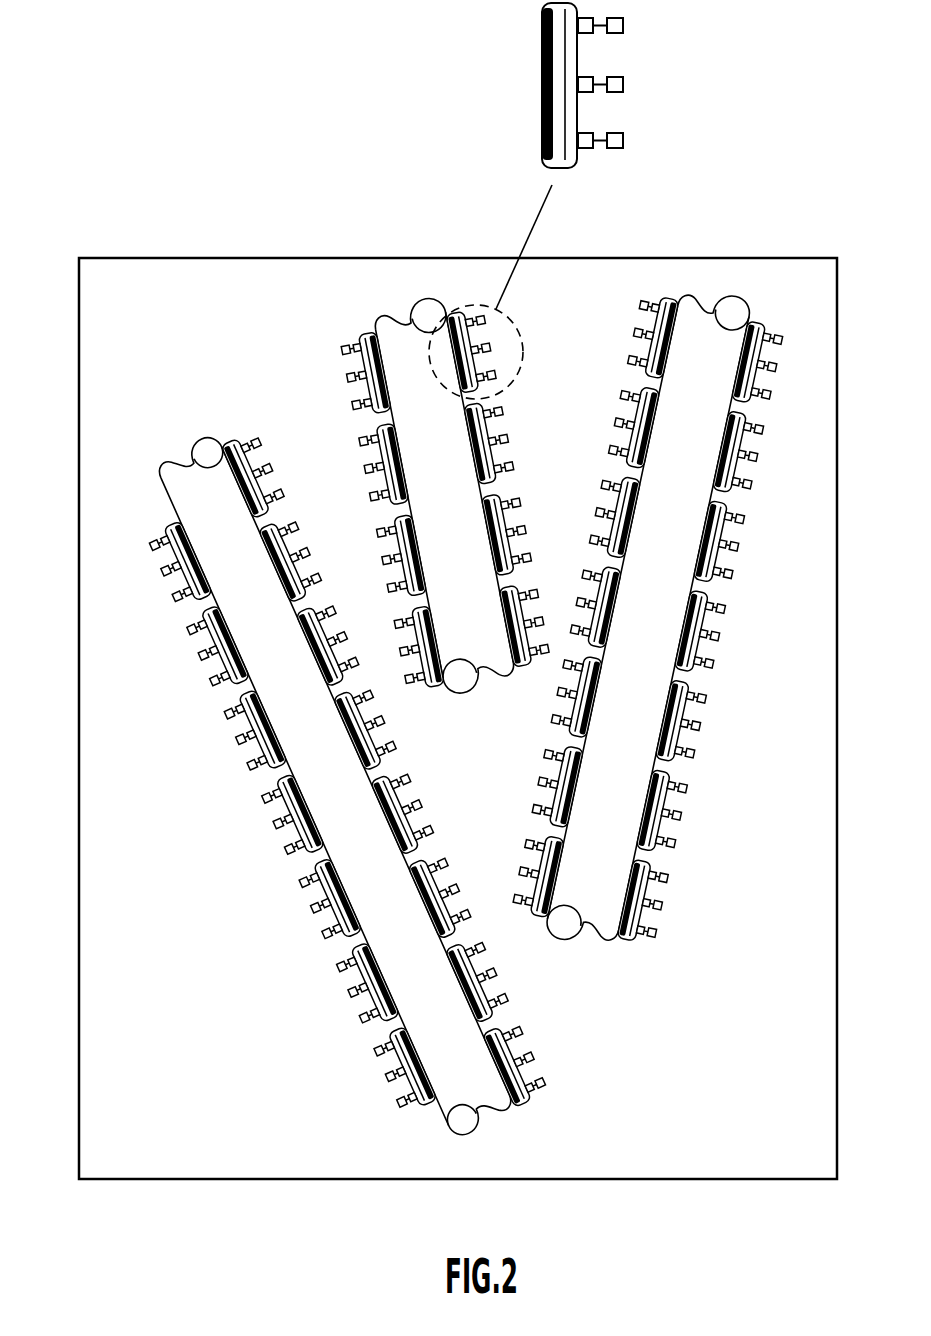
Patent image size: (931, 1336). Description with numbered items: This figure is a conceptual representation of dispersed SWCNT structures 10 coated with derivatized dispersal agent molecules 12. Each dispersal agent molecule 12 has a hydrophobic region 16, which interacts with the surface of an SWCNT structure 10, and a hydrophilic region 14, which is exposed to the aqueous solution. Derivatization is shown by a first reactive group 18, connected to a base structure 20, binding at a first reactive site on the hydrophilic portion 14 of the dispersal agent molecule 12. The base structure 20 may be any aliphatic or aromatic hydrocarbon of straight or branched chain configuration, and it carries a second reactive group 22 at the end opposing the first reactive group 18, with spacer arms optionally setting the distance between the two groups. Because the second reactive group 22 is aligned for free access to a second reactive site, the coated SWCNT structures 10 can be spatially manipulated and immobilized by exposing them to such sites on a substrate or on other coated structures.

The SWCNT structures 10 is at (295, 705).
The dispersal agent molecules 12 is at (180, 556).
The hydrophilic region 14 is at (572, 57).
The hydrophobic region 16 is at (543, 49).
The first reactive group 18 is at (587, 150).
The base structure 20 is at (595, 143).
The second reactive group 22 is at (613, 143).